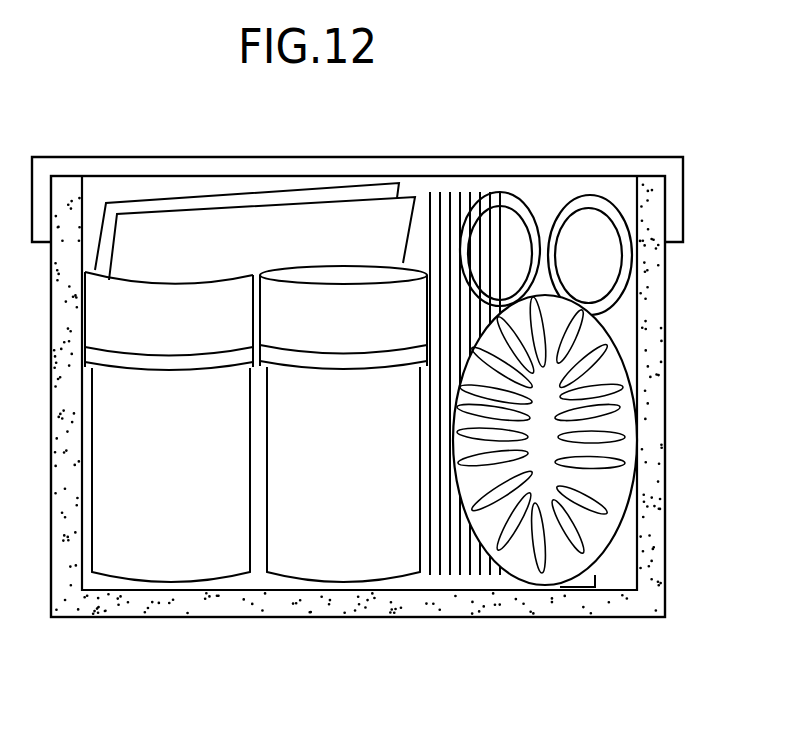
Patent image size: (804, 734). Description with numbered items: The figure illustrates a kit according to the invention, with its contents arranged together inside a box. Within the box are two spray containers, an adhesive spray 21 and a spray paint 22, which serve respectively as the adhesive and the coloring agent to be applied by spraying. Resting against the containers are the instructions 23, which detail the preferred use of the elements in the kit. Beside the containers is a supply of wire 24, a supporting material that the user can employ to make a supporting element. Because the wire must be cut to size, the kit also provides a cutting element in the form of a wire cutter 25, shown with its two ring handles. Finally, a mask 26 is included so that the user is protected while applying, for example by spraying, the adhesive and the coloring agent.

The adhesive spray 21 is at (322, 469).
The spray paint 22 is at (147, 467).
The instructions 23 is at (243, 252).
The wire 24 is at (450, 572).
The wire cutter 25 is at (553, 257).
The mask 26 is at (620, 420).